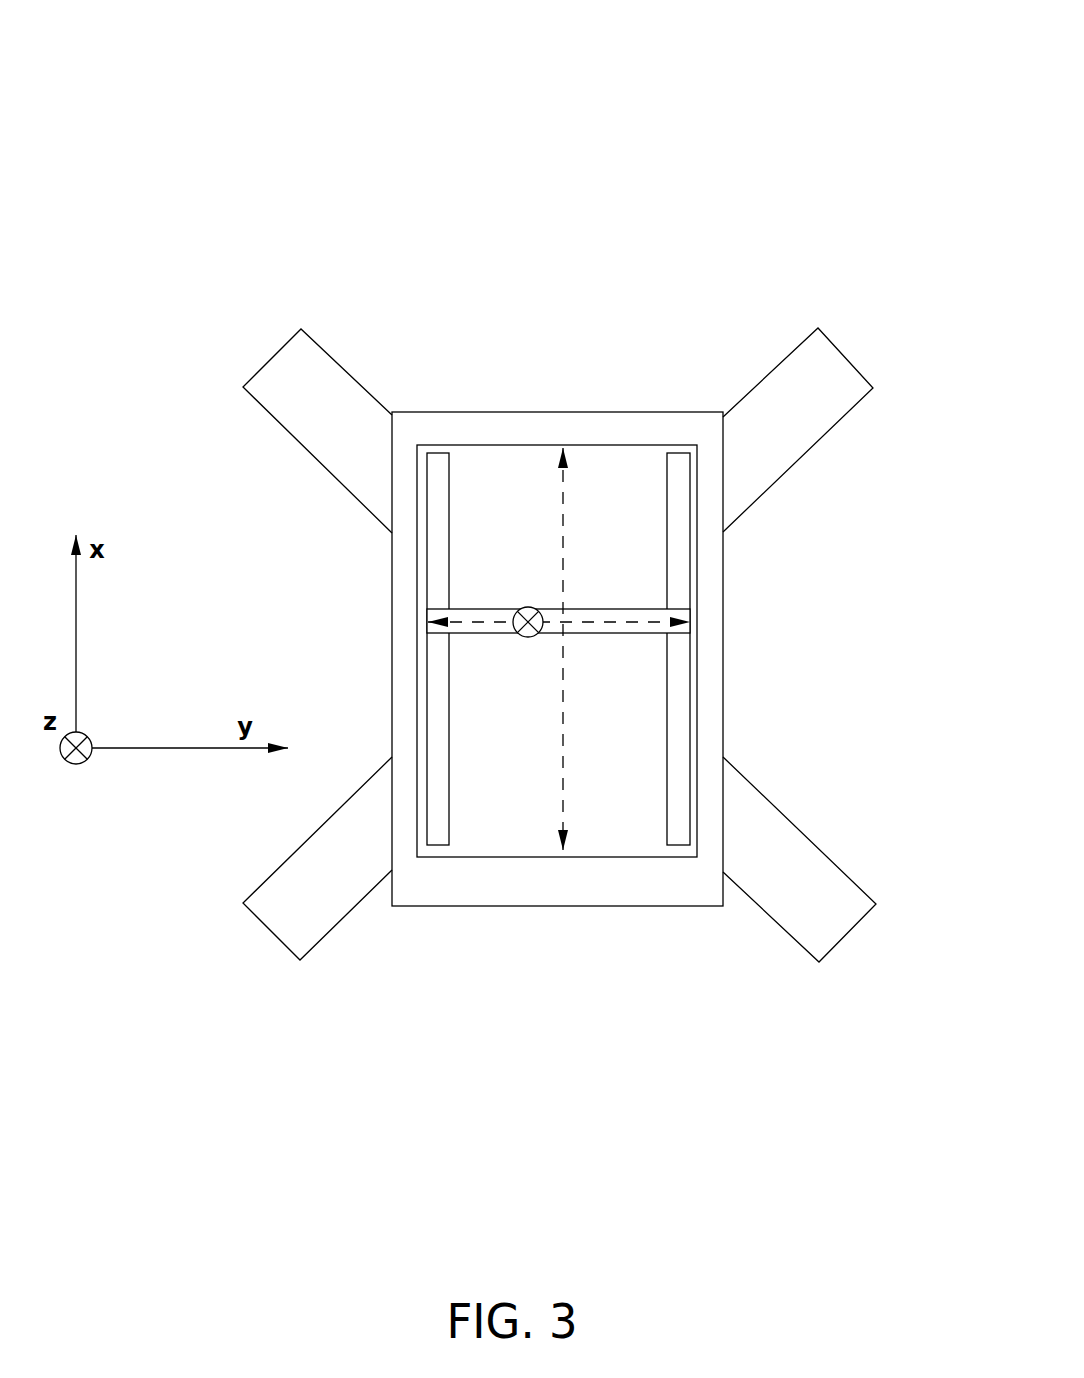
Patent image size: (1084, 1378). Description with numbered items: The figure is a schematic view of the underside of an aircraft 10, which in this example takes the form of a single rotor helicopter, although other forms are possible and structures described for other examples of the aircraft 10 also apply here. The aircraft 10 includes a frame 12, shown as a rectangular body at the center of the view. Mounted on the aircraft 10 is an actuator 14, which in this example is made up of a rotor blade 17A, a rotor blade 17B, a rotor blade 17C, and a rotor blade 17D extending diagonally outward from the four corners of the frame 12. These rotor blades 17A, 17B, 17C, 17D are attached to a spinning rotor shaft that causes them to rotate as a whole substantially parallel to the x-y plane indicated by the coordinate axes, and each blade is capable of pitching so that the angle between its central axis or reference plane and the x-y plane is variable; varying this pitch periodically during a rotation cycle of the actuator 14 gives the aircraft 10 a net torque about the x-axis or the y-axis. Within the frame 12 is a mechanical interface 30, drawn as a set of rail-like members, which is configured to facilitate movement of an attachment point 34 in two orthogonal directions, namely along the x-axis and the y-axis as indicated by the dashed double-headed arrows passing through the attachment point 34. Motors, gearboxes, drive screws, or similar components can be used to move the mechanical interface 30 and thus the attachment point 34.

The aircraft 10 is at (872, 87).
The frame 12 is at (480, 412).
The actuator 14 is at (590, 622).
The rotor blade 17A is at (288, 932).
The rotor blade 17B is at (797, 923).
The rotor blade 17C is at (820, 350).
The rotor blade 17D is at (311, 358).
The mechanical interface 30 is at (705, 600).
The attachment point 34 is at (529, 607).